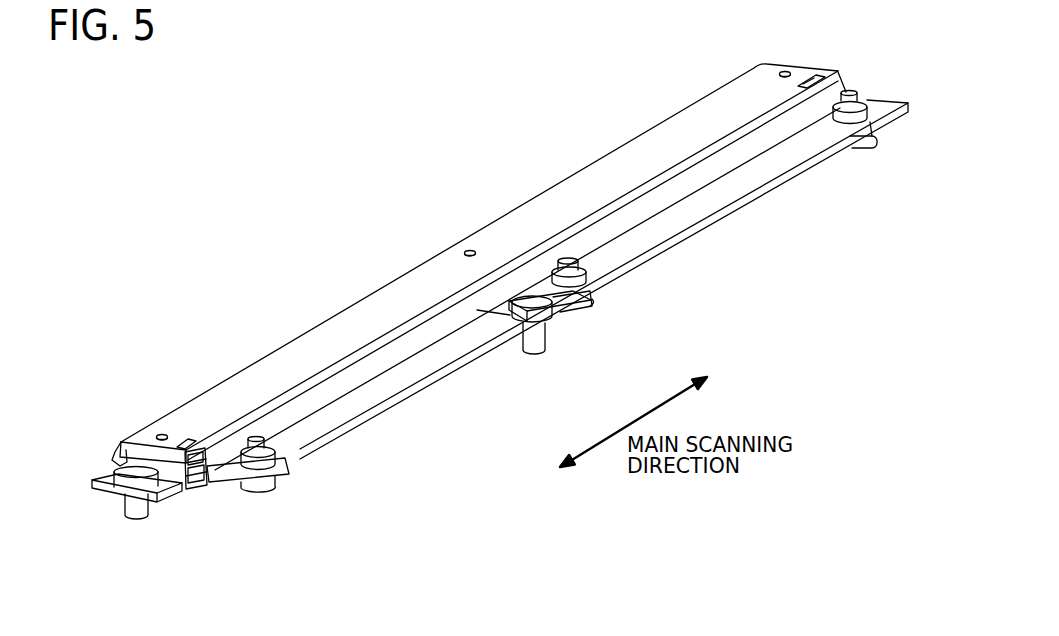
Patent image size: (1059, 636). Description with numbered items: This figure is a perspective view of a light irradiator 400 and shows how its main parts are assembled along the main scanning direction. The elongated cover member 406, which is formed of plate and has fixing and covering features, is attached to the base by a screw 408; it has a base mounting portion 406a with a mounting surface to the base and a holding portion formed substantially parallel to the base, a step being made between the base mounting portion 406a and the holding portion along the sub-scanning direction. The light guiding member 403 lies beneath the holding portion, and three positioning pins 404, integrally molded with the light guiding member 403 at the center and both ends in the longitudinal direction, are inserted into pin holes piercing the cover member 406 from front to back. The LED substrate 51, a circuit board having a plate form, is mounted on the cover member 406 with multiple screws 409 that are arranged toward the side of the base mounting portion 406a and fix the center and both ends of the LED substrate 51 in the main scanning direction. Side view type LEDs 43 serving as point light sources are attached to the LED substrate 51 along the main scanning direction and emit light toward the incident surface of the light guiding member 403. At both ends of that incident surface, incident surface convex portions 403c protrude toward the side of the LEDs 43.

The light irradiator 400 is at (310, 229).
The light guiding member 403 is at (116, 451).
The incident surface convex portion 403c is at (197, 490).
The positioning pin 404 is at (784, 71).
The cover member 406 is at (735, 193).
The base mounting portion 406a is at (807, 80).
The screw 408 is at (546, 320).
The screw 409 is at (864, 122).
The LED 43 is at (208, 483).
The LED substrate 51 is at (205, 490).